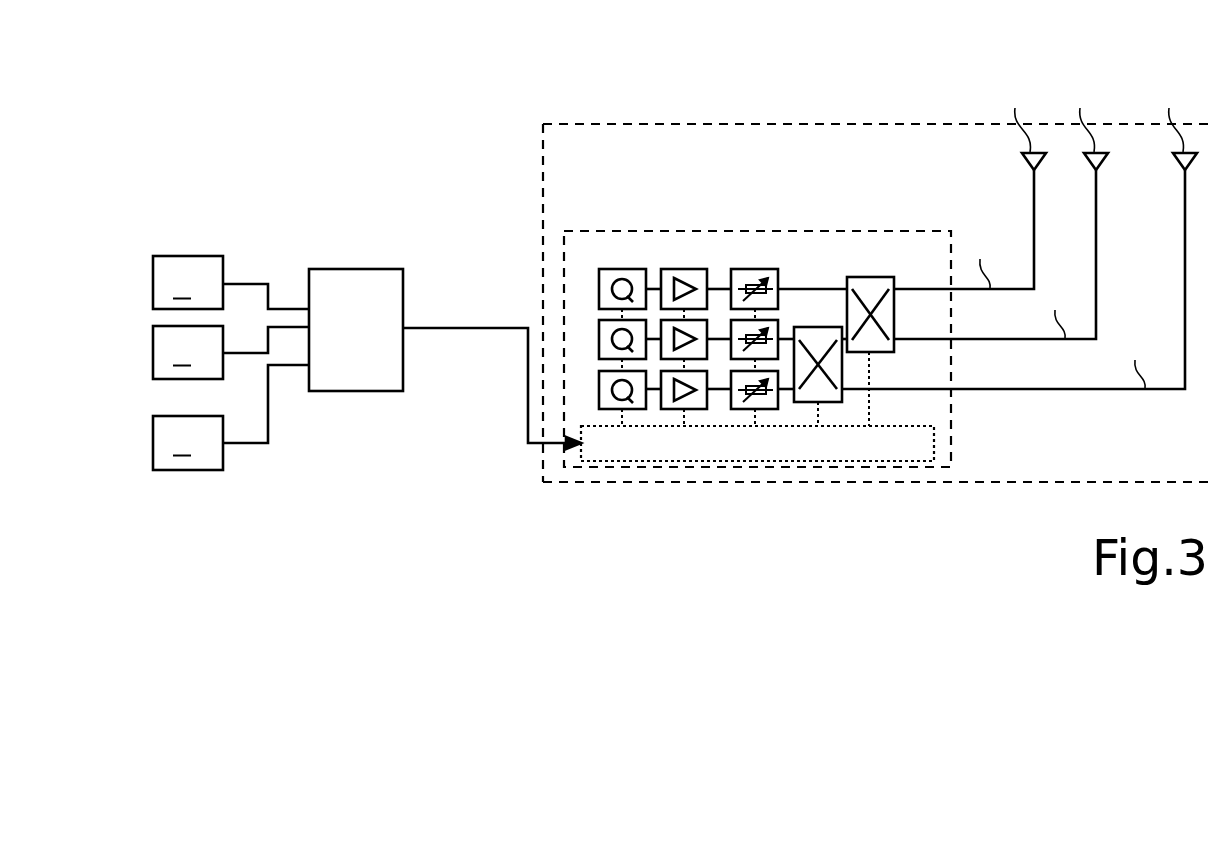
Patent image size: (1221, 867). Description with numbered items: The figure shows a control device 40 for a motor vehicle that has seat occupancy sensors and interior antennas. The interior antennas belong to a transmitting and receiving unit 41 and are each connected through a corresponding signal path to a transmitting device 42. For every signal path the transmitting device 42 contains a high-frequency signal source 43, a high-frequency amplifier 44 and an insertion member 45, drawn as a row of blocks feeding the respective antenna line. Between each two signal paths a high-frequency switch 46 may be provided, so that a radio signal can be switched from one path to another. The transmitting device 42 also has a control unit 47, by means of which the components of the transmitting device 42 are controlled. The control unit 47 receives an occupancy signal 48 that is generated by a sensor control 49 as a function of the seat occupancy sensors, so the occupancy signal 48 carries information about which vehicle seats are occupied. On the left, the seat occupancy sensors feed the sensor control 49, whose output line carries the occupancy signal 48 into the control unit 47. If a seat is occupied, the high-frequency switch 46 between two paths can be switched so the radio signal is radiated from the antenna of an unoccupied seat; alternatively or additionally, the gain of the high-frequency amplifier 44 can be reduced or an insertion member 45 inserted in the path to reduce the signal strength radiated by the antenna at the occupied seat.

The control device 40 is at (608, 56).
The transmitting and receiving unit 41 is at (983, 483).
The transmitting device 42 is at (690, 231).
The high-frequency signal source 43 is at (622, 269).
The high-frequency amplifier 44 is at (684, 269).
The insertion member 45 is at (755, 269).
The high-frequency switch 46 is at (869, 277).
The control unit 47 is at (880, 463).
The occupancy signal 48 is at (460, 330).
The sensor control 49 is at (357, 269).